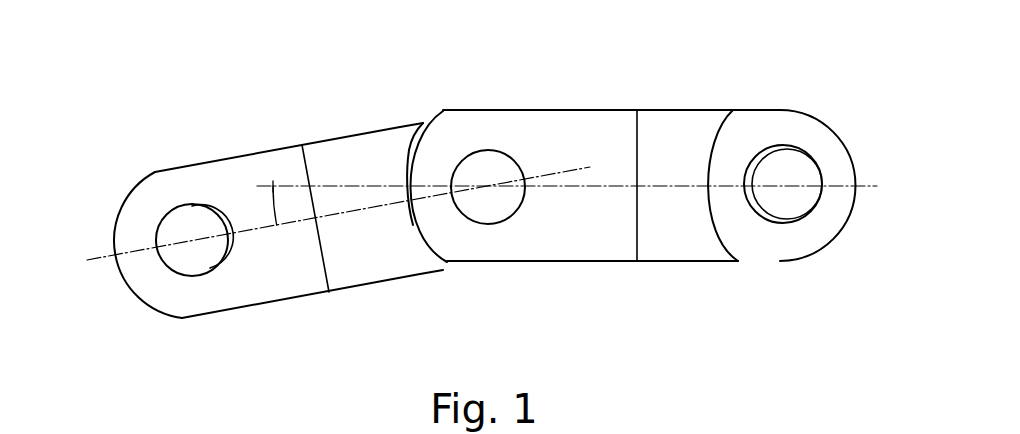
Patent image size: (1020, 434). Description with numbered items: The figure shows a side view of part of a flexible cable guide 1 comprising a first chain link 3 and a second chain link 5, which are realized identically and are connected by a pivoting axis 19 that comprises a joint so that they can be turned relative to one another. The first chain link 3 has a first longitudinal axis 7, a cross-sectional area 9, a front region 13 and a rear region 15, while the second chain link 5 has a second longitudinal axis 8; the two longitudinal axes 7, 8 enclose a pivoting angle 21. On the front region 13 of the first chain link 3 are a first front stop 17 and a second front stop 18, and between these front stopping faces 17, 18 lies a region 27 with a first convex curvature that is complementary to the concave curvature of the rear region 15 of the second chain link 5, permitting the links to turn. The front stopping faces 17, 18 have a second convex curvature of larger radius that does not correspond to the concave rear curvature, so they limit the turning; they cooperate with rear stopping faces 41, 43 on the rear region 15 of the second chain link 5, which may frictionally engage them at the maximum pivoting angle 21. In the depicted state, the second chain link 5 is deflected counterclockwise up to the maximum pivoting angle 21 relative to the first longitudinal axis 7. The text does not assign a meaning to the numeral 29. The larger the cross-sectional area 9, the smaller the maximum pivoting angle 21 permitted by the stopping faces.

The flexible cable guide 1 is at (162, 62).
The first chain link 3 is at (675, 133).
The second chain link 5 is at (243, 167).
The first longitudinal axis 7 is at (865, 181).
The second longitudinal axis 8 is at (107, 256).
The cross-sectional area 9 is at (305, 160).
The front region 13 is at (158, 192).
The rear region 15 is at (421, 116).
The first front stop 17 is at (443, 112).
The second front stop 18 is at (442, 272).
The pivoting axis 19 is at (488, 192).
The pivoting angle 21 is at (353, 203).
The region with first convex curvature 27 is at (428, 214).
The link body 29 is at (475, 252).
The rear stopping face 41 is at (415, 148).
The rear stopping face 43 is at (428, 246).